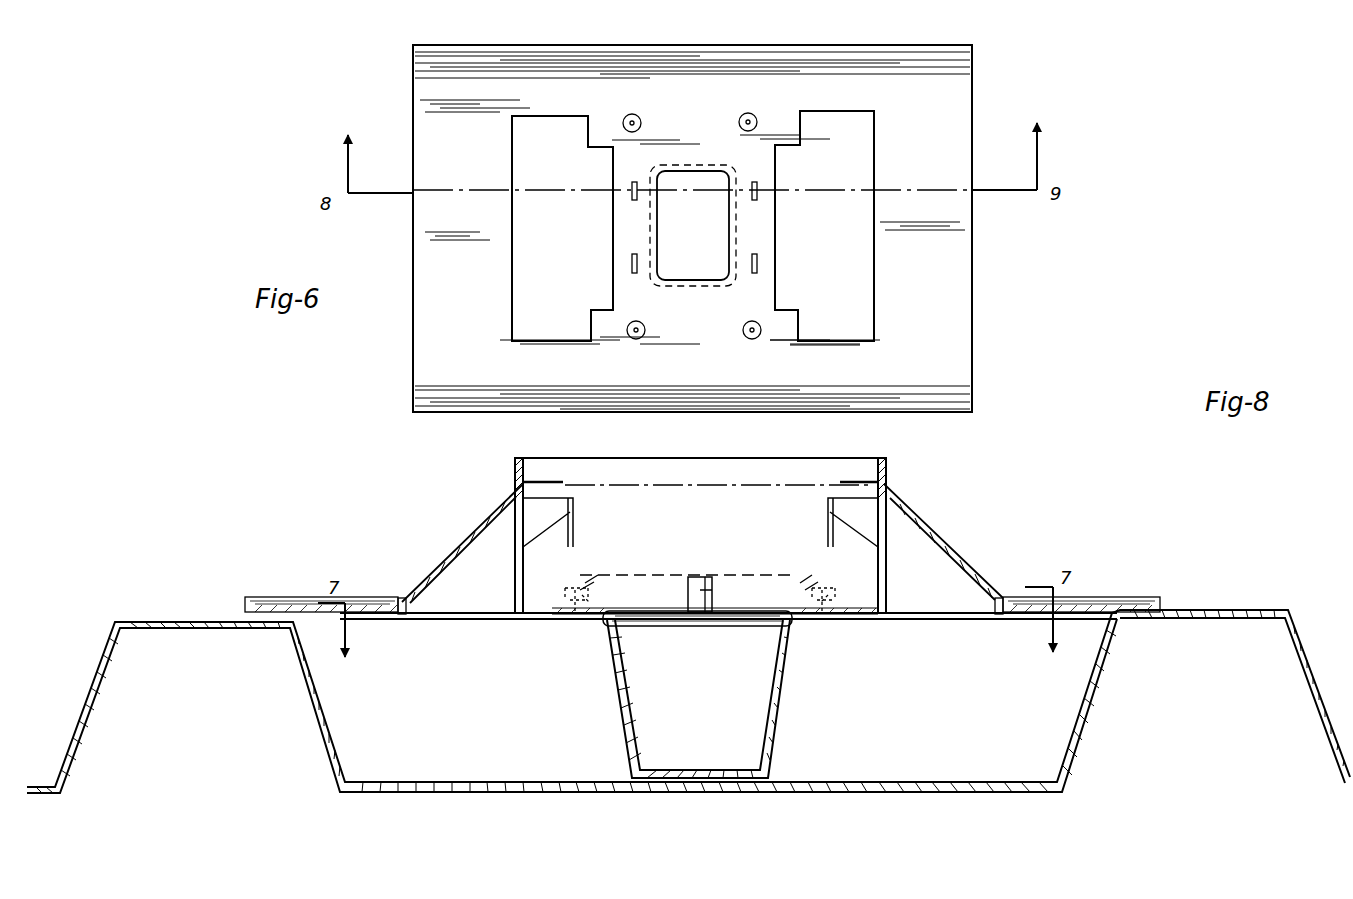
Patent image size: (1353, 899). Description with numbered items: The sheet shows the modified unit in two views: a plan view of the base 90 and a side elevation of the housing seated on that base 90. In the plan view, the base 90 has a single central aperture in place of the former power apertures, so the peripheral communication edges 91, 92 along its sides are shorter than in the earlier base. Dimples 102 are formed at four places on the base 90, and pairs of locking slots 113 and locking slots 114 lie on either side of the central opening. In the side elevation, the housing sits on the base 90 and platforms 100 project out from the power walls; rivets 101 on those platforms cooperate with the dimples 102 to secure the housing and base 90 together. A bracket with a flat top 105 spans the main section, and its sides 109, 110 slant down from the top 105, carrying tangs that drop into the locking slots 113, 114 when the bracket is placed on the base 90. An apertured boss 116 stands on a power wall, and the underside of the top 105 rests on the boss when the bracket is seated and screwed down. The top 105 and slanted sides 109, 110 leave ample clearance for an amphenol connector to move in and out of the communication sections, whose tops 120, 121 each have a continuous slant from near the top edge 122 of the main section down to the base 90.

In FIG. 6, the base 90 is at (706, 180).
In FIG. 6, the peripheral communication edge 91 is at (413, 225).
In FIG. 6, the peripheral communication edge 92 is at (972, 280).
In FIG. 6, the dimples 102 is at (638, 114).
In FIG. 6, the locking slots 113 is at (632, 262).
In FIG. 6, the locking slots 114 is at (757, 262).
In FIG. 8, the platforms 100 is at (575, 590).
In FIG. 8, the rivets 101 is at (566, 616).
In FIG. 8, the flat top 105 is at (742, 575).
In FIG. 8, the side 109 is at (588, 588).
In FIG. 8, the side 110 is at (818, 590).
In FIG. 8, the apertured boss 116 is at (722, 598).
In FIG. 8, the top 120 is at (950, 542).
In FIG. 8, the top 121 is at (463, 547).
In FIG. 8, the top edge 122 is at (640, 458).